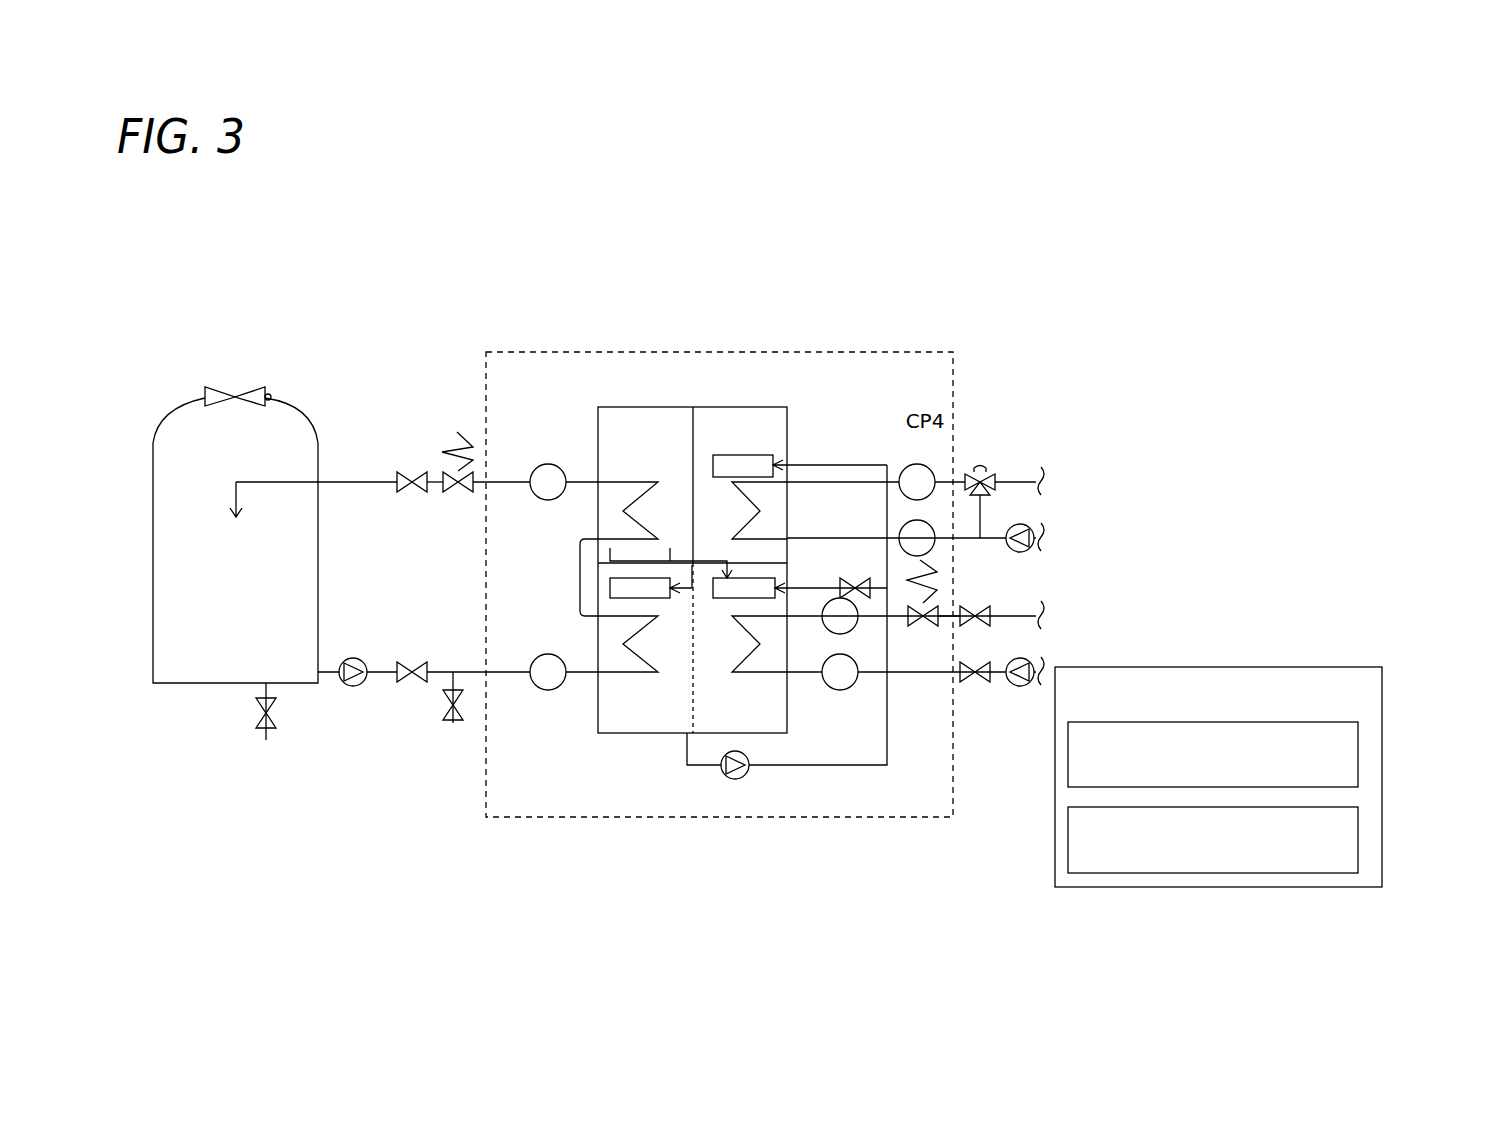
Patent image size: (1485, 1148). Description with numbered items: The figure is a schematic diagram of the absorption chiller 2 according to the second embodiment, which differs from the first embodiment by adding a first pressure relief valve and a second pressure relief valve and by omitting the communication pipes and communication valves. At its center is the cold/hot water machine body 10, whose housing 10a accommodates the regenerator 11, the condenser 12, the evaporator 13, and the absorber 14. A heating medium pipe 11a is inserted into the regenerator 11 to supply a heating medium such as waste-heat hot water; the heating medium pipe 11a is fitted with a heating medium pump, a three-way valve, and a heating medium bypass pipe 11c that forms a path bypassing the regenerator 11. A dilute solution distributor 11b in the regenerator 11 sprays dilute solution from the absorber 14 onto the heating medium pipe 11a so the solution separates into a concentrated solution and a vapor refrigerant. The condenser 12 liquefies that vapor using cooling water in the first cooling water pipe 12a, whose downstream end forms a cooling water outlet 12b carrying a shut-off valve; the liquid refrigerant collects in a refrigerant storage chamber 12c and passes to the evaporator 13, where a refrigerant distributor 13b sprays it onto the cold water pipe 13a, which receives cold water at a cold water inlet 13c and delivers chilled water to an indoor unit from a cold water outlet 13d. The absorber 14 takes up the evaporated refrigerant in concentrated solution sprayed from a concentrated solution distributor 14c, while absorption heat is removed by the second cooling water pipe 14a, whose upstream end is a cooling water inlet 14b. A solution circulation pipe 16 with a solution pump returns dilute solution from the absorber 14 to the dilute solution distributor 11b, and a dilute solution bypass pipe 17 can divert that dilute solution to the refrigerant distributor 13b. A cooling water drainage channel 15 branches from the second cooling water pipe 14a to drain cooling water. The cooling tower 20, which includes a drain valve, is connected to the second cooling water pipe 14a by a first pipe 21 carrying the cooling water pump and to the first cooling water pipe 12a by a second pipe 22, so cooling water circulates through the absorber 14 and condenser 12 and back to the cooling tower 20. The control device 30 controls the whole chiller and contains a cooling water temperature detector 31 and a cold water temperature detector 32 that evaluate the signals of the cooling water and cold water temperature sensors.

The absorption chiller 2 is at (1288, 325).
The cold/hot water machine body 10 is at (486, 352).
The housing 10a is at (663, 733).
The regenerator 11 is at (715, 397).
The heating medium pipe 11a is at (1035, 480).
The dilute solution distributor 11b is at (789, 461).
The heating medium bypass pipe 11c is at (982, 500).
The condenser 12 is at (639, 410).
The first cooling water pipe 12a is at (492, 482).
The cooling water outlet 12b is at (430, 487).
The refrigerant storage chamber 12c is at (582, 553).
The evaporator 13 is at (773, 767).
The cold water pipe 13a is at (875, 673).
The refrigerant distributor 13b is at (727, 600).
The cold water inlet 13c is at (957, 670).
The cold water outlet 13d is at (955, 628).
The absorber 14 is at (610, 691).
The second cooling water pipe 14a is at (502, 673).
The cooling water inlet 14b is at (430, 667).
The concentrated solution distributor 14c is at (578, 614).
The cooling water drainage channel 15 is at (453, 723).
The solution circulation pipe 16 is at (775, 694).
The dilute solution bypass pipe 17 is at (828, 593).
The cooling tower 20 is at (190, 413).
The first pipe 21 is at (380, 670).
The second pipe 22 is at (328, 485).
The control device 30 is at (1383, 682).
The cooling water temperature detector 31 is at (1358, 763).
The cold water temperature detector 32 is at (1358, 827).